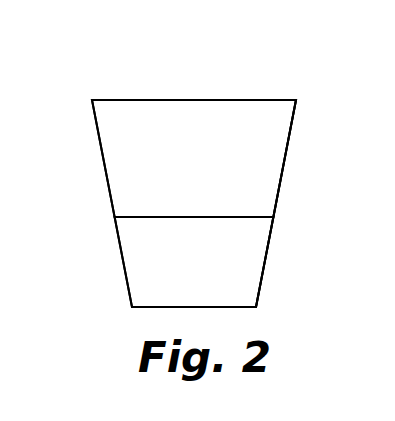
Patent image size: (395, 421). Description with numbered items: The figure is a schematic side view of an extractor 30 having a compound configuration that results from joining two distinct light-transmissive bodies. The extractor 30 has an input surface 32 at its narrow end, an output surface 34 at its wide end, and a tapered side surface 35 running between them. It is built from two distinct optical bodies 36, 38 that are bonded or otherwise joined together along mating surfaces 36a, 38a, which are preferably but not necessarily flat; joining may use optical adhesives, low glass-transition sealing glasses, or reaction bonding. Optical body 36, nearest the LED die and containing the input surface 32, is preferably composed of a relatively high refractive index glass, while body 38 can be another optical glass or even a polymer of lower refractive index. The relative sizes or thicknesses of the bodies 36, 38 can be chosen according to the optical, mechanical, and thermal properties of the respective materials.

The extractor 30 is at (111, 72).
The input surface 32 is at (155, 308).
The output surface 34 is at (181, 100).
The tapered side surface 35 is at (285, 167).
The optical body 36 is at (252, 254).
The mating surface 36a is at (140, 216).
The optical body 38 is at (228, 113).
The mating surface 38a is at (153, 220).